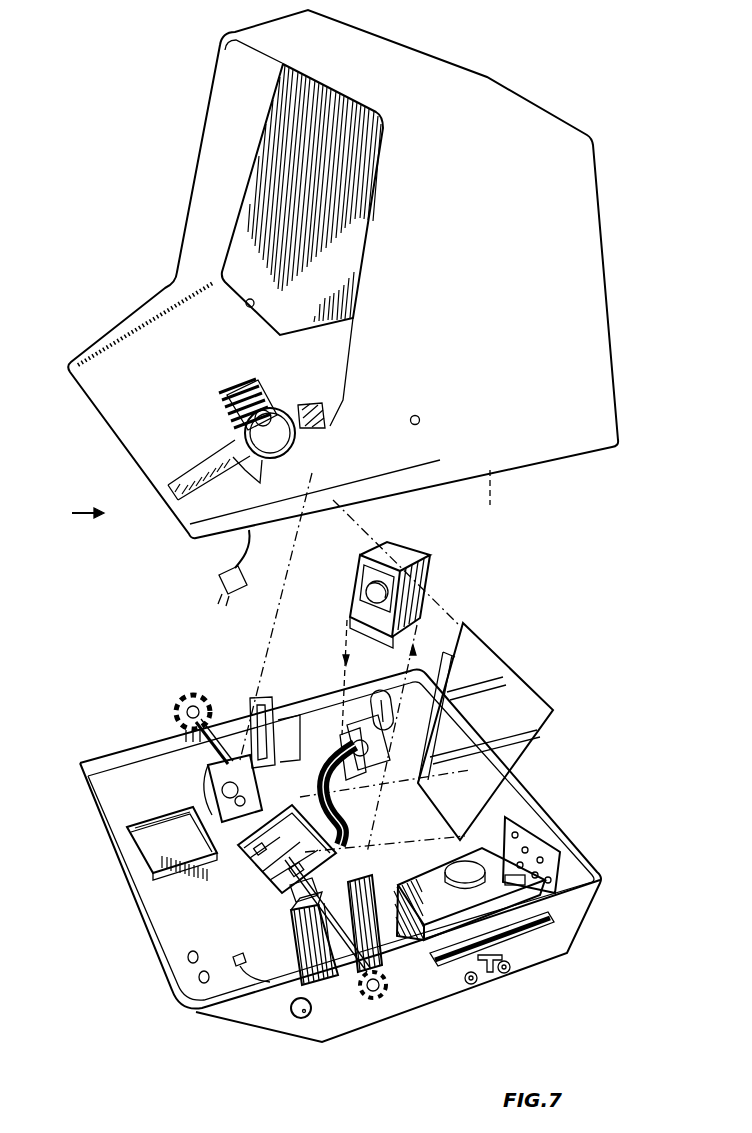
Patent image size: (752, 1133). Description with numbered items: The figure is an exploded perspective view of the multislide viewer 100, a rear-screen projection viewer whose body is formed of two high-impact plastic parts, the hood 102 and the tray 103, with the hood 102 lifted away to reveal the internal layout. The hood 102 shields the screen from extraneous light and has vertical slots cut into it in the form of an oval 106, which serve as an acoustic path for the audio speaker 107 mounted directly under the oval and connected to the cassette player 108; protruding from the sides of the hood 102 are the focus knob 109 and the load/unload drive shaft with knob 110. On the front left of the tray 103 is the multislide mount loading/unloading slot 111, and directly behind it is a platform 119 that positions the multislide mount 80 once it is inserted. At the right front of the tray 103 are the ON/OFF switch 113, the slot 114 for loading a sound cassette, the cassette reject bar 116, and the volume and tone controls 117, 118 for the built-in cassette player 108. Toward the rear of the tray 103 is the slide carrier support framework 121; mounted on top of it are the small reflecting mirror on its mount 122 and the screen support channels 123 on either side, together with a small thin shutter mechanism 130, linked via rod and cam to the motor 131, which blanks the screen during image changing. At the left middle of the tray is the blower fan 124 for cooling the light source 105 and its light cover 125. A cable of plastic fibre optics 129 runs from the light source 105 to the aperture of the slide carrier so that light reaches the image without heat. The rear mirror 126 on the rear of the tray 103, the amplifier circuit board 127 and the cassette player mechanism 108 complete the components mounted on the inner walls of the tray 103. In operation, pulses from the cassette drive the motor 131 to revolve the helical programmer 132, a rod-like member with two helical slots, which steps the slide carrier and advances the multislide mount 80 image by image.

The multislide viewer 100 is at (65, 512).
The hood 102 is at (208, 163).
The oval 106 is at (237, 387).
The audio speaker 107 is at (280, 440).
The light cover 125 is at (432, 567).
The rear mirror 126 is at (513, 686).
The LOAD/UNLOAD drive shaft with knob 110 is at (192, 692).
The blower fan 124 is at (310, 712).
The light source 105 is at (380, 692).
The motor 131 is at (214, 766).
The shutter mechanism 130 is at (180, 797).
The multislide mount loading/unloading slot 111 is at (155, 853).
The platform 119 is at (140, 888).
The cable of plastic fibre optics 129 is at (348, 815).
The amplifier circuit board 127 is at (538, 838).
The cassette player 108 is at (500, 884).
The slot 114 is at (555, 925).
The mirror mount 122 is at (237, 847).
The helical programmer 132 is at (297, 890).
The multislide mount 80 is at (190, 953).
The tone control 118 is at (512, 972).
The volume control 117 is at (470, 985).
The cassette reject bar 116 is at (489, 975).
The tray 103 is at (230, 1016).
The ON/OFF switch 113 is at (291, 1022).
The screen support channels 123 is at (347, 967).
The focus knob 109 is at (373, 1000).
The support framework 121 is at (313, 1037).